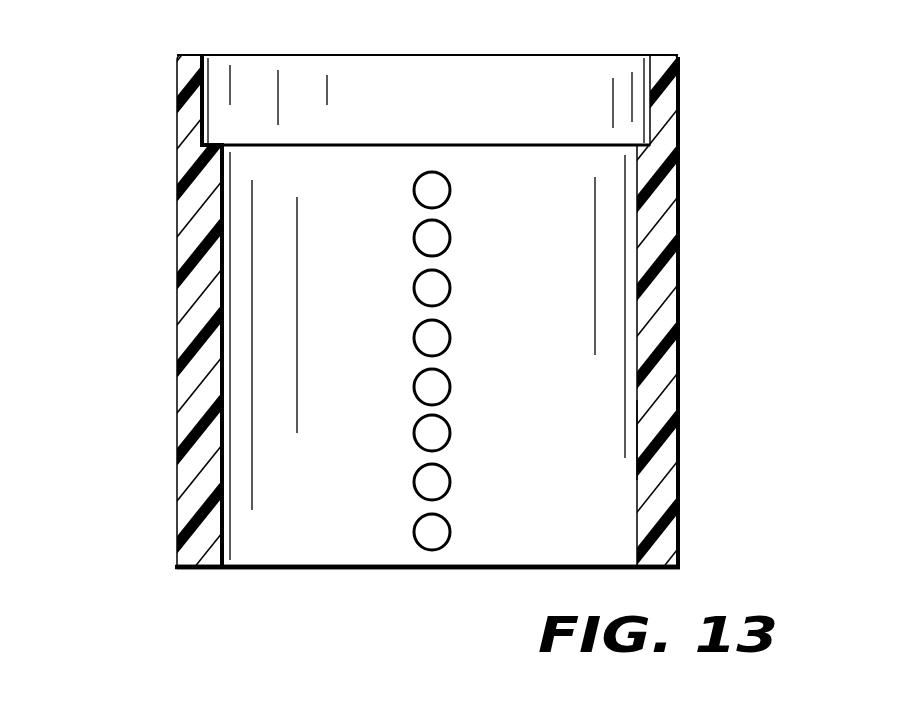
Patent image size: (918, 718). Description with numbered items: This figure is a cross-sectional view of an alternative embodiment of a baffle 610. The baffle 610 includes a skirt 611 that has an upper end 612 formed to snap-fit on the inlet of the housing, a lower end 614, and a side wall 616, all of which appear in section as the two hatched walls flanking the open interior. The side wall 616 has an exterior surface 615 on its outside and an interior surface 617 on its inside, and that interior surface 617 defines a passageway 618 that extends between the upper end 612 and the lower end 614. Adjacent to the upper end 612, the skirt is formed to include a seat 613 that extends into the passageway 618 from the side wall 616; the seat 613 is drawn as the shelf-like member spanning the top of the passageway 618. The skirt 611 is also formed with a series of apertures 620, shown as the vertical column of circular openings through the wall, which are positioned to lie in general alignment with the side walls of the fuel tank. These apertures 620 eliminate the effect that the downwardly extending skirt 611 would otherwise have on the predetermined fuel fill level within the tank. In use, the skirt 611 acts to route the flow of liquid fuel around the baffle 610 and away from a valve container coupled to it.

The baffle 610 is at (148, 316).
The skirt 611 is at (167, 421).
The upper end 612 is at (663, 58).
The seat 613 is at (210, 145).
The lower end 614 is at (200, 570).
The exterior surface 615 is at (678, 373).
The side wall 616 is at (665, 439).
The interior surface 617 is at (222, 430).
The passageway 618 is at (519, 537).
The apertures 620 is at (438, 225).